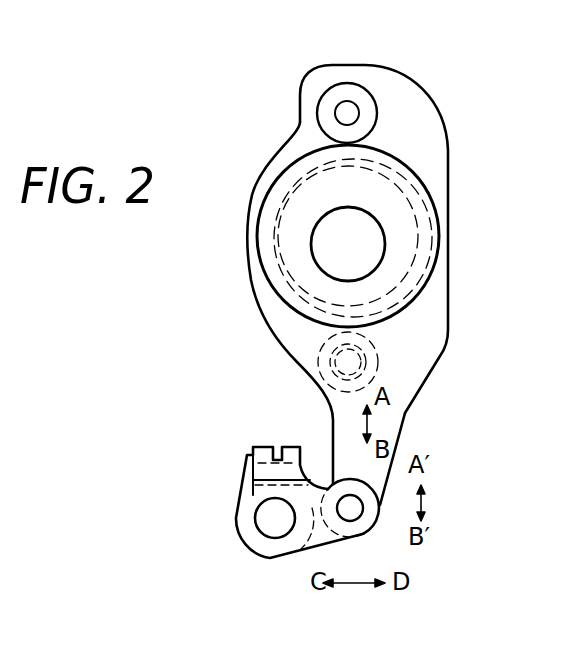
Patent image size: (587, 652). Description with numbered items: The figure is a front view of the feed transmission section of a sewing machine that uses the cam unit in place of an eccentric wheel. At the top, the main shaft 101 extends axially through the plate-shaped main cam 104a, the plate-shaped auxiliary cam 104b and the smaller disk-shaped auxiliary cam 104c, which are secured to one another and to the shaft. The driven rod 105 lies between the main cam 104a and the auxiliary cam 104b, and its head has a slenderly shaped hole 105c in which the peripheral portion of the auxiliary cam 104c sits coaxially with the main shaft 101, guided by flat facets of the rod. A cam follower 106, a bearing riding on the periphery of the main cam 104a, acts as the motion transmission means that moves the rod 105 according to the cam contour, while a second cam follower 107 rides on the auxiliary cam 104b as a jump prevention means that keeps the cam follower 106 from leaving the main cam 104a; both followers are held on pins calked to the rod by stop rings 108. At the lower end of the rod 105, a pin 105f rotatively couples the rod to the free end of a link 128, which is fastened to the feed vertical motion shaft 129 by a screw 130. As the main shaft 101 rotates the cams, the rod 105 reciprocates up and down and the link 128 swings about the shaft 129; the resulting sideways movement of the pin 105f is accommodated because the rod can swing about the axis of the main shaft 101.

The main shaft 101 is at (385, 242).
The main cam 104a is at (318, 258).
The auxiliary cam (A) 104b is at (425, 288).
The auxiliary cam (B) 104c is at (413, 187).
The driven rod 105 is at (405, 423).
The slenderly shaped hole 105c is at (388, 153).
The pin 105f is at (355, 520).
The cam follower 106 is at (323, 93).
The cam follower 107 is at (378, 355).
The stop rings 108 is at (318, 362).
The link 128 is at (302, 553).
The feed vertical motion shaft 129 is at (237, 516).
The screw 130 is at (245, 463).